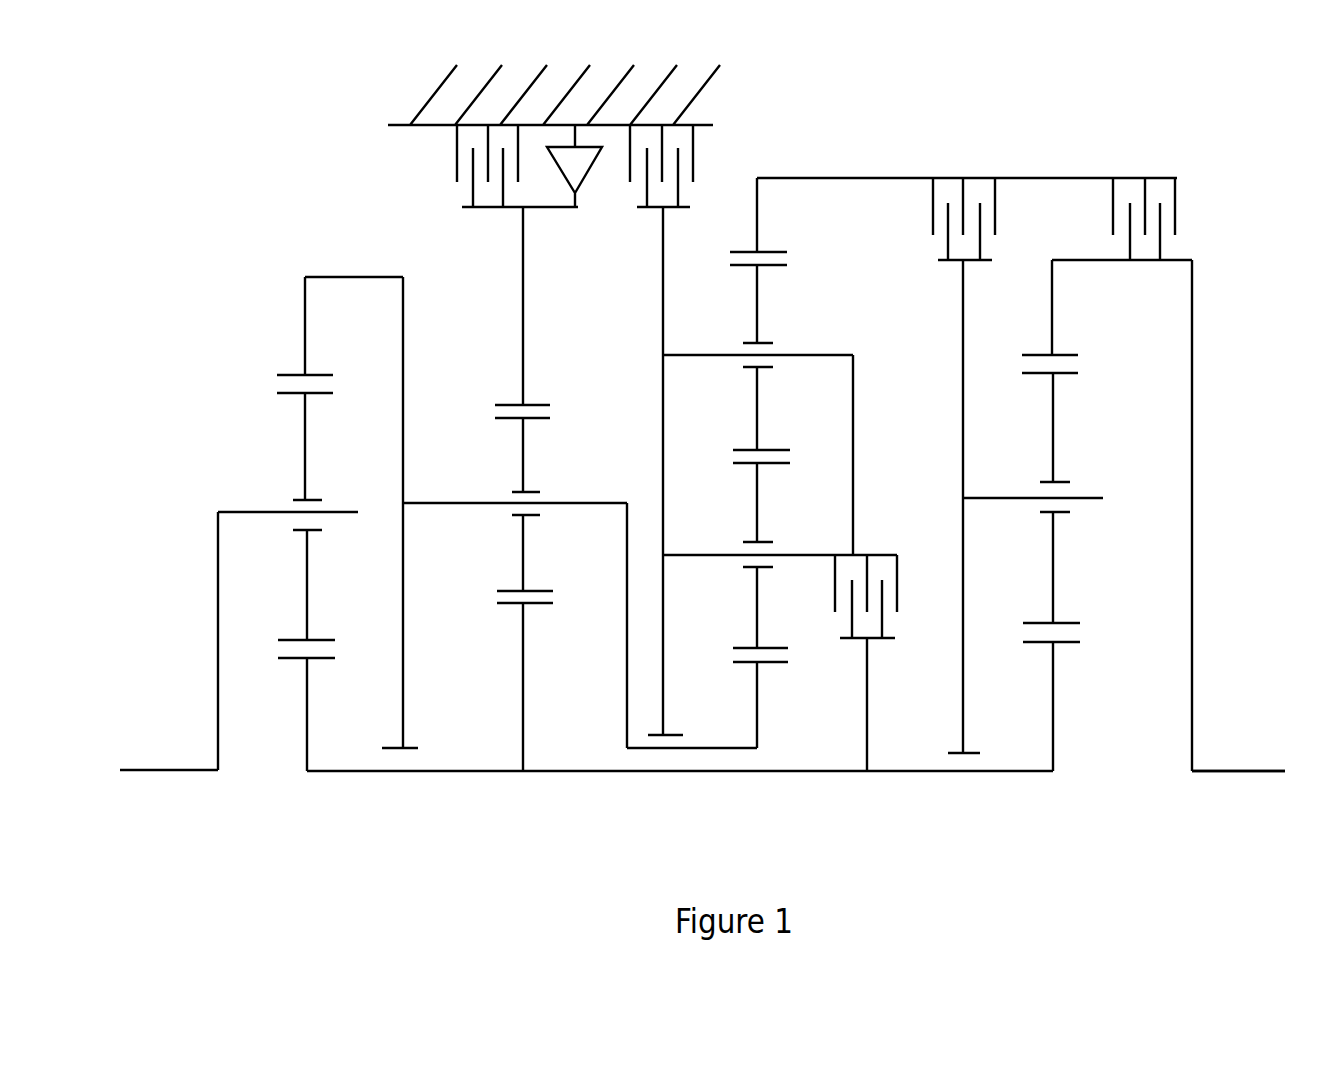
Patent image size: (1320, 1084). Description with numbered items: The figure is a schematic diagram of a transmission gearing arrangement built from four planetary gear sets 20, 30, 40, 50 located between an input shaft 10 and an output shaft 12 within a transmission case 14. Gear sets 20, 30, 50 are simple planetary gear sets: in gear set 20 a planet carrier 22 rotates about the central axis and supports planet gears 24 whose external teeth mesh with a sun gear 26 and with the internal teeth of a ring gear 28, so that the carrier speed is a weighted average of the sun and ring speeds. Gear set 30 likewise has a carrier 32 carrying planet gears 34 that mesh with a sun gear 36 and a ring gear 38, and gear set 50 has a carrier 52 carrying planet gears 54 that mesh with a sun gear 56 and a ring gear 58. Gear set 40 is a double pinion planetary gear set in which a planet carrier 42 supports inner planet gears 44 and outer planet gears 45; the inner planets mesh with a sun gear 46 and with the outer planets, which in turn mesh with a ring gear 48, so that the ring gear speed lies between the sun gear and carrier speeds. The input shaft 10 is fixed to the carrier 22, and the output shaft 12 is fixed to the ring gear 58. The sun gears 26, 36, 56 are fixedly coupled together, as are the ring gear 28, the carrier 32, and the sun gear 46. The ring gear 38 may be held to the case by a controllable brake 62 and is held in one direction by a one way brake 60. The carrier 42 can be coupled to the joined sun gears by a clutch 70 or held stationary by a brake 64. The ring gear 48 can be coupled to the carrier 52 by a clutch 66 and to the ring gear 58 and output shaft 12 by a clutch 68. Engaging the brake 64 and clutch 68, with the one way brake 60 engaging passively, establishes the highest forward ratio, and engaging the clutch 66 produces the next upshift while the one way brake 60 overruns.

The input shaft 10 is at (158, 772).
The output shaft 12 is at (1250, 772).
The transmission case 14 is at (445, 82).
The planetary gear set 20 is at (361, 552).
The planet carrier 22 is at (216, 580).
The planet gears 24 is at (308, 460).
The sun gear 26 is at (307, 703).
The ring gear 28 is at (305, 332).
The planetary gear set 30 is at (580, 666).
The carrier 32 is at (403, 428).
The planet gears 34 is at (525, 462).
The sun gear 36 is at (525, 648).
The ring gear 38 is at (523, 342).
The double pinion planetary gear set 40 is at (780, 591).
The planet carrier 42 is at (663, 388).
The inner planet gears 44 is at (757, 510).
The outer planet gears 45 is at (757, 300).
The sun gear 46 is at (759, 708).
The ring gear 48 is at (757, 208).
The planetary gear set 50 is at (1165, 545).
The carrier 52 is at (963, 400).
The planet gears 54 is at (1053, 443).
The sun gear 56 is at (1053, 685).
The ring gear 58 is at (1053, 312).
The one way brake 60 is at (594, 160).
The controllable brake 62 is at (457, 165).
The controllable brake 64 is at (693, 153).
The clutch 66 is at (933, 209).
The clutch 68 is at (1177, 200).
The clutch 70 is at (902, 590).